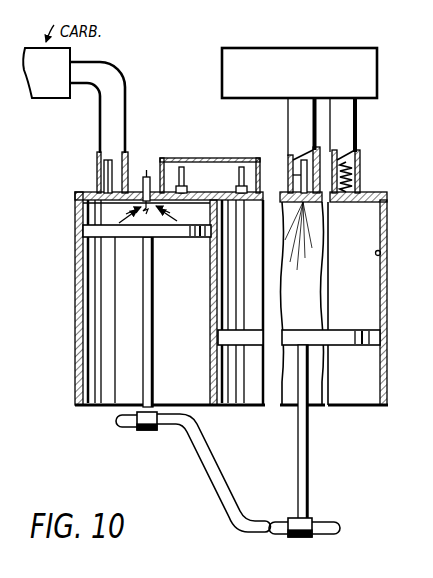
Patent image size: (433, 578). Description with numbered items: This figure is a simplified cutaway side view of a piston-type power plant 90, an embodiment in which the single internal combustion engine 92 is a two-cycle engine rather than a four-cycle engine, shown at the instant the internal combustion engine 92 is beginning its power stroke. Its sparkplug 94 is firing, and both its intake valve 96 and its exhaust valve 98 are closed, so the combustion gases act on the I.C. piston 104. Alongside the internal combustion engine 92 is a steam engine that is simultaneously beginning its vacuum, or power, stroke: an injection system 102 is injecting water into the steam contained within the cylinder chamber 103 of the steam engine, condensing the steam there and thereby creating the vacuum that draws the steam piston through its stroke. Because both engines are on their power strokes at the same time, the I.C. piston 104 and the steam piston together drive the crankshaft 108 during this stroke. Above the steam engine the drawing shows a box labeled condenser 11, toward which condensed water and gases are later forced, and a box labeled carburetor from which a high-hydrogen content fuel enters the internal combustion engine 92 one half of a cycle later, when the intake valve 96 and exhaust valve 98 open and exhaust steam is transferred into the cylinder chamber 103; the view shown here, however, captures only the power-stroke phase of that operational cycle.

The condenser 11 is at (227, 68).
The power plant 90 is at (71, 274).
The internal combustion engine 92 is at (186, 365).
The sparkplug 94 is at (147, 176).
The intake valve 96 is at (106, 203).
The exhaust valve 98 is at (190, 206).
The injection system 102 is at (300, 181).
The cylinder chamber 103 is at (383, 256).
The I.C. piston 104 is at (186, 240).
The crankshaft 108 is at (207, 453).